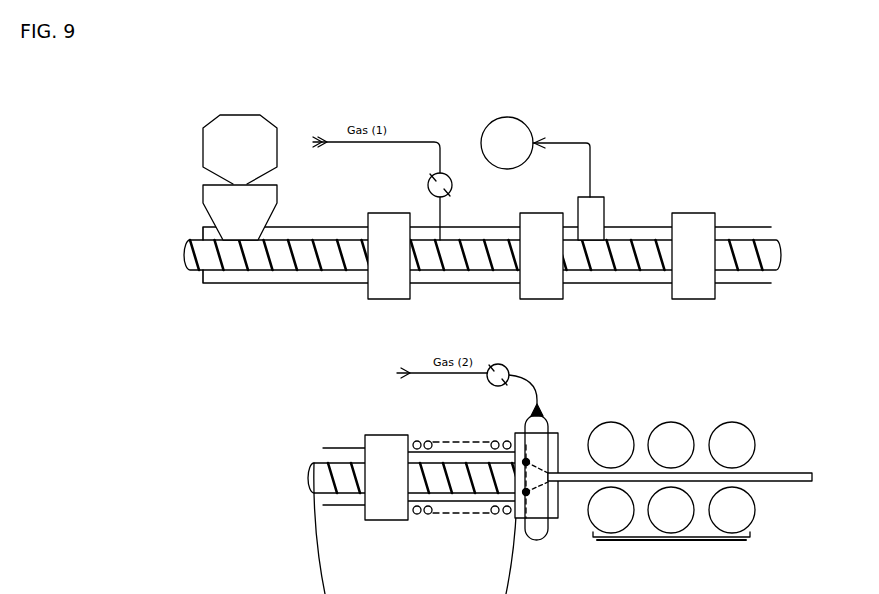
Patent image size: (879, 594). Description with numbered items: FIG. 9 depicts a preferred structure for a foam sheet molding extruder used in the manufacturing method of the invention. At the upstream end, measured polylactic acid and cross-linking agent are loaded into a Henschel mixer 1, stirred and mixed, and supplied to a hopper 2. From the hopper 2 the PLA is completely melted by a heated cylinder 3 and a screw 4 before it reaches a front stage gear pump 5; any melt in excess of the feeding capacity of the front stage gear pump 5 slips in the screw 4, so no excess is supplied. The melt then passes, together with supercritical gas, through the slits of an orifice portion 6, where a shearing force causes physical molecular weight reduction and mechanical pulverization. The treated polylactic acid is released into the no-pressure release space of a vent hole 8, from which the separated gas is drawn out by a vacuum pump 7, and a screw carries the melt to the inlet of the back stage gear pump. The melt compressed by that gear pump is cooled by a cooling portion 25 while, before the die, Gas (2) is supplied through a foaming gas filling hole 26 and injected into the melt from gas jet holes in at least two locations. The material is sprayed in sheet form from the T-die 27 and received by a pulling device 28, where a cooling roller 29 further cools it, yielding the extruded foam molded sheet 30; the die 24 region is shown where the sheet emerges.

The Henschel mixer 1 is at (252, 115).
The hopper 2 is at (277, 192).
The heated cylinder 3 is at (323, 282).
The screw 4 is at (258, 264).
The front stage gear pump 5 is at (380, 285).
The orifice portion 6 is at (535, 290).
The vacuum pump 7 is at (520, 115).
The vent hole 8 is at (593, 196).
The die 24 is at (549, 490).
The cooling portion 25 is at (485, 515).
The foaming gas filling hole 26 is at (525, 433).
The T-die 27 is at (556, 436).
The pulling device 28 is at (670, 540).
The cooling roller 29 is at (668, 432).
The extruded foam molded sheet 30 is at (767, 470).